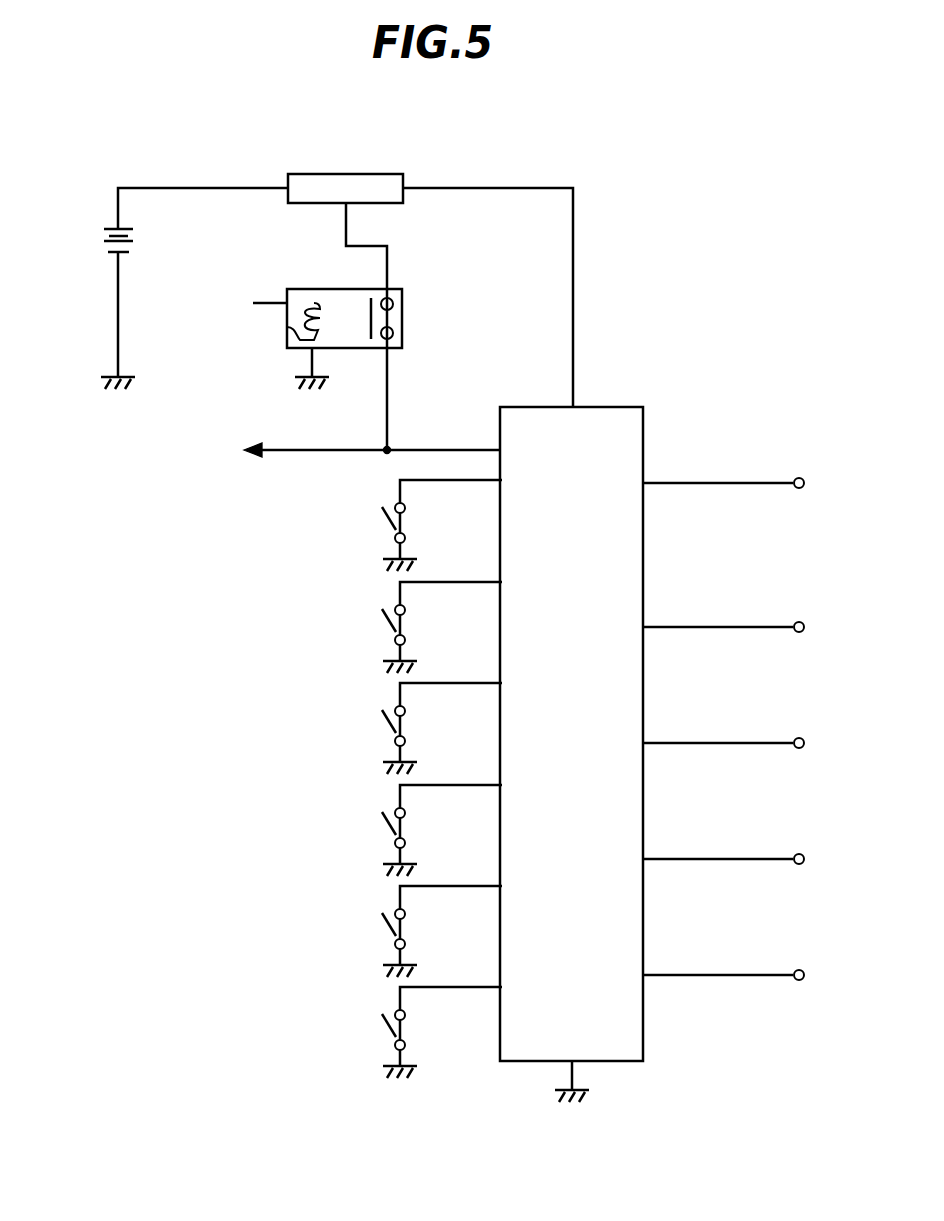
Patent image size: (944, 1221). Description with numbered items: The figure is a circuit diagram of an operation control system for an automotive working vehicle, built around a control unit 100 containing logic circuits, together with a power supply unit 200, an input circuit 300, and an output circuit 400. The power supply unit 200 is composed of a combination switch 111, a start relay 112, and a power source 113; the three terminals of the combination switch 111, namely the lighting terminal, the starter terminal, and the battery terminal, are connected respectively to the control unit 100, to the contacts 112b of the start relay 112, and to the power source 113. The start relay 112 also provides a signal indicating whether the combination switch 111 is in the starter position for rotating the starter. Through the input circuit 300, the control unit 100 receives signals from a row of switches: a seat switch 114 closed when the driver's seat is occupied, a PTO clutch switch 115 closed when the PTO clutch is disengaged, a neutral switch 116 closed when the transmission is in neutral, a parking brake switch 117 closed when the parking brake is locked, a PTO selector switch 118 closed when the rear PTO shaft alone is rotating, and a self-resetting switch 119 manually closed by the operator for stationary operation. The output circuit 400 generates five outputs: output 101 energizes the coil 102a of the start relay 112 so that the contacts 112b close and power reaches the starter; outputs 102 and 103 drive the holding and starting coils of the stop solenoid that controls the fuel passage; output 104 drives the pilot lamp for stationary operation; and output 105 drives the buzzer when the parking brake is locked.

The control unit 100 is at (629, 407).
The output 101 is at (527, 391).
The output 102 is at (751, 627).
The output 103 is at (751, 743).
The output 104 is at (751, 859).
The output 105 is at (751, 975).
The relay coil 102a is at (287, 327).
The combination switch 111 is at (336, 174).
The start relay 112 is at (358, 325).
The contacts 112b is at (395, 330).
The power source 113 is at (104, 240).
The seat switch 114 is at (382, 523).
The PTO clutch switch 115 is at (385, 628).
The neutral switch 116 is at (388, 731).
The parking brake switch 117 is at (387, 823).
The PTO selector switch 118 is at (387, 933).
The self-resetting switch 119 is at (387, 1033).
The power supply unit 200 is at (143, 183).
The input circuit 300 is at (307, 687).
The output circuit 400 is at (527, 637).